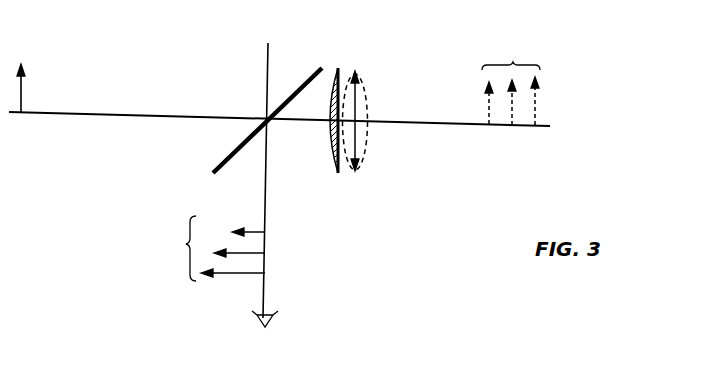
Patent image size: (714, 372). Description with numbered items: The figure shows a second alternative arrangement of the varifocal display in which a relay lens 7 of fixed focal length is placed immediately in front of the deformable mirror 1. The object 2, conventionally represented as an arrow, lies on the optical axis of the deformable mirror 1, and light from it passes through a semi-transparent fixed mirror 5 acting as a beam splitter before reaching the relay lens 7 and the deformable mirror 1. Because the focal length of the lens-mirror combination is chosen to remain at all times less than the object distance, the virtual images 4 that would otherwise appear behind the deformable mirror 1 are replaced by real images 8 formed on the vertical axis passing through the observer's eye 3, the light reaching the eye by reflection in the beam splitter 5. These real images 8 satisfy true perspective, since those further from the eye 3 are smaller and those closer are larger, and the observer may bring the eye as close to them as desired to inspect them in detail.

The deformable varifocal mirror 1 is at (358, 100).
The object 2 is at (22, 94).
The observer's eye 3 is at (274, 318).
The virtual image 4 is at (513, 62).
The semi-transparent fixed mirror 5 is at (311, 79).
The relay lens 7 is at (327, 148).
The real image 8 is at (186, 244).